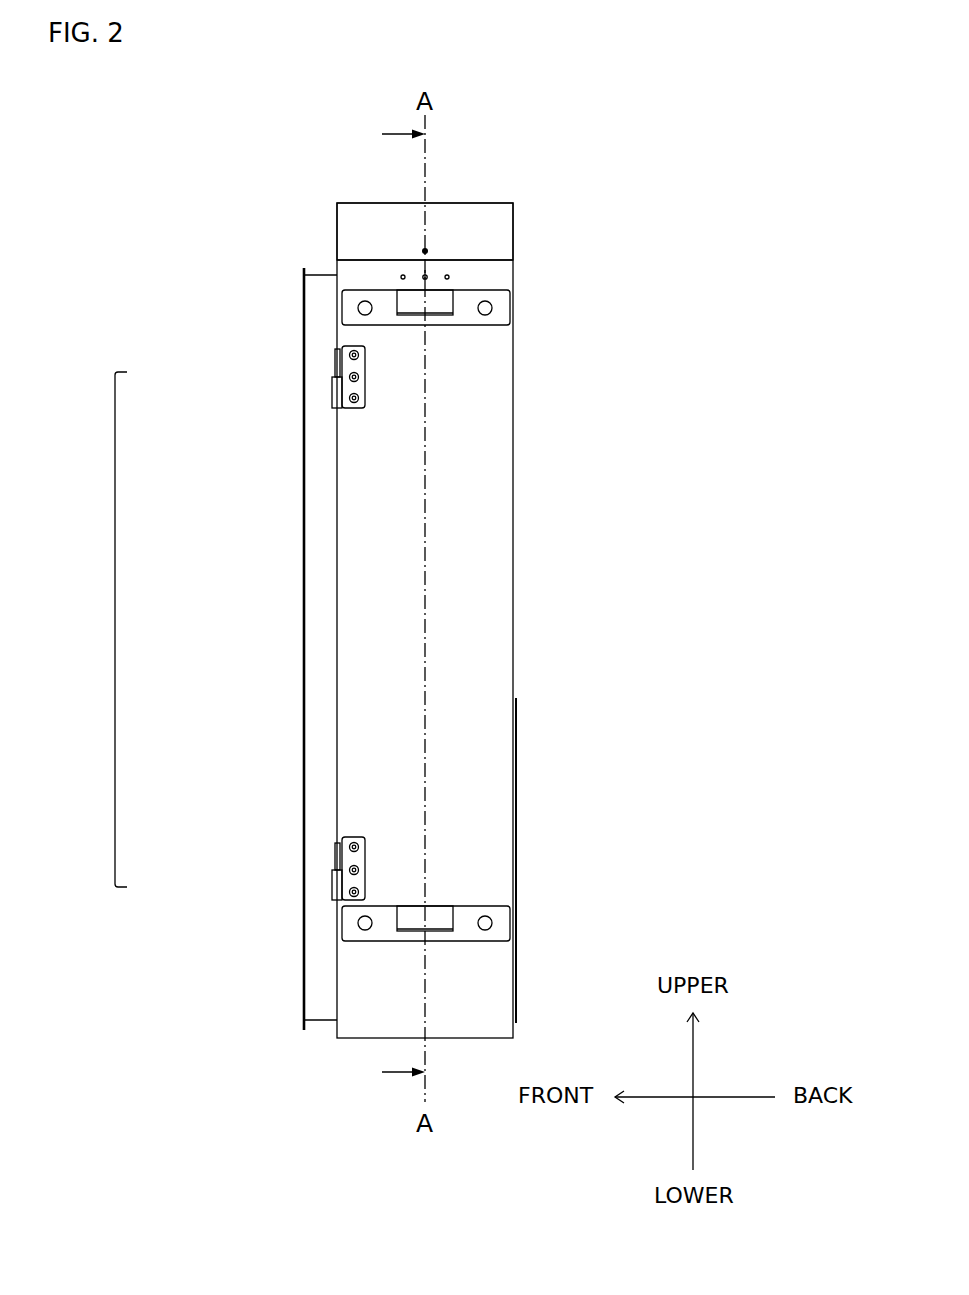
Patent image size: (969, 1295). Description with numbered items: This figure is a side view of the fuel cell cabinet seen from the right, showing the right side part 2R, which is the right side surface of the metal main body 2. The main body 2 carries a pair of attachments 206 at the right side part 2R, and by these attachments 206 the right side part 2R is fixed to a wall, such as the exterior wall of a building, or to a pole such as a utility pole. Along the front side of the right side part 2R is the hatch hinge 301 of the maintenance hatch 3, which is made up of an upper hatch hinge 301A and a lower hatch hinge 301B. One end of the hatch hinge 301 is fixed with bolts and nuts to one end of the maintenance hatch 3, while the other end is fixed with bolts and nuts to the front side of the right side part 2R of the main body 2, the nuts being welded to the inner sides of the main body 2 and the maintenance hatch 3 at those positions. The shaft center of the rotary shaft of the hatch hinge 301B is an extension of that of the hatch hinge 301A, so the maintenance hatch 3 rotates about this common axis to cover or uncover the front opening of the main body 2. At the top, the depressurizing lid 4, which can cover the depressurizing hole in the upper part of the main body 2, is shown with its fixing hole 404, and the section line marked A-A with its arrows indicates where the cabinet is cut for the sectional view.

The main body 2 is at (542, 469).
The right side part 2R is at (463, 688).
The maintenance hatch 3 is at (290, 986).
The depressurizing lid 4 is at (362, 190).
The fixing hole 404 is at (425, 251).
The attachments 206 is at (345, 301).
The hatch hinge 301 is at (115, 630).
The hatch hinge 301A is at (335, 379).
The hatch hinge 301B is at (335, 871).